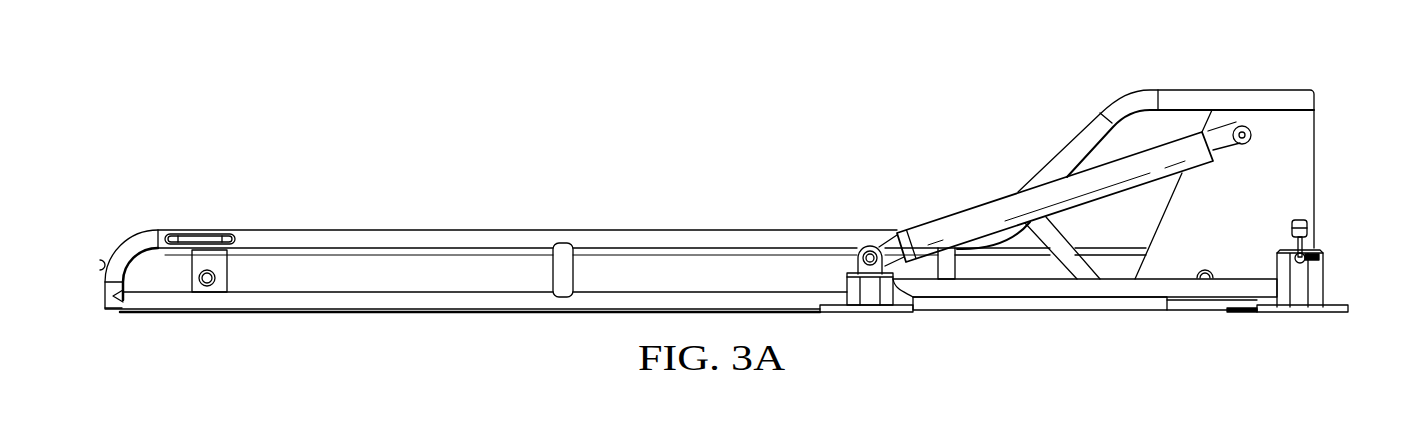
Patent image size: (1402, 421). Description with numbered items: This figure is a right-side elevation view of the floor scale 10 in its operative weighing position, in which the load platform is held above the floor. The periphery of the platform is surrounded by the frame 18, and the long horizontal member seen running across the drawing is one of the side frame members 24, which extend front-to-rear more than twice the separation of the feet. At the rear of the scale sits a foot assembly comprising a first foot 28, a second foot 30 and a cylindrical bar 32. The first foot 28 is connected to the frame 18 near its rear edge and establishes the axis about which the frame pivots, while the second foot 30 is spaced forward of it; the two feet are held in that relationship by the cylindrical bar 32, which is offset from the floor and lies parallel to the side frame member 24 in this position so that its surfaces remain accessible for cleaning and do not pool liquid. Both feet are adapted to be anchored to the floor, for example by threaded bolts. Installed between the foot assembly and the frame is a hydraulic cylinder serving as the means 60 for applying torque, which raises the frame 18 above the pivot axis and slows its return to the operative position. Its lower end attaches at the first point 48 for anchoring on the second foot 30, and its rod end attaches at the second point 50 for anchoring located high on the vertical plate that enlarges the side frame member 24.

The floor scale 10 is at (748, 109).
The frame 18 is at (345, 230).
The side frame member 24 is at (558, 228).
The first foot 28 is at (1325, 279).
The second foot 30 is at (868, 313).
The cylindrical bar 32 is at (1238, 277).
The first point for anchoring 48 is at (873, 250).
The second point for anchoring 50 is at (1245, 145).
The means for applying torque 60 is at (1000, 198).